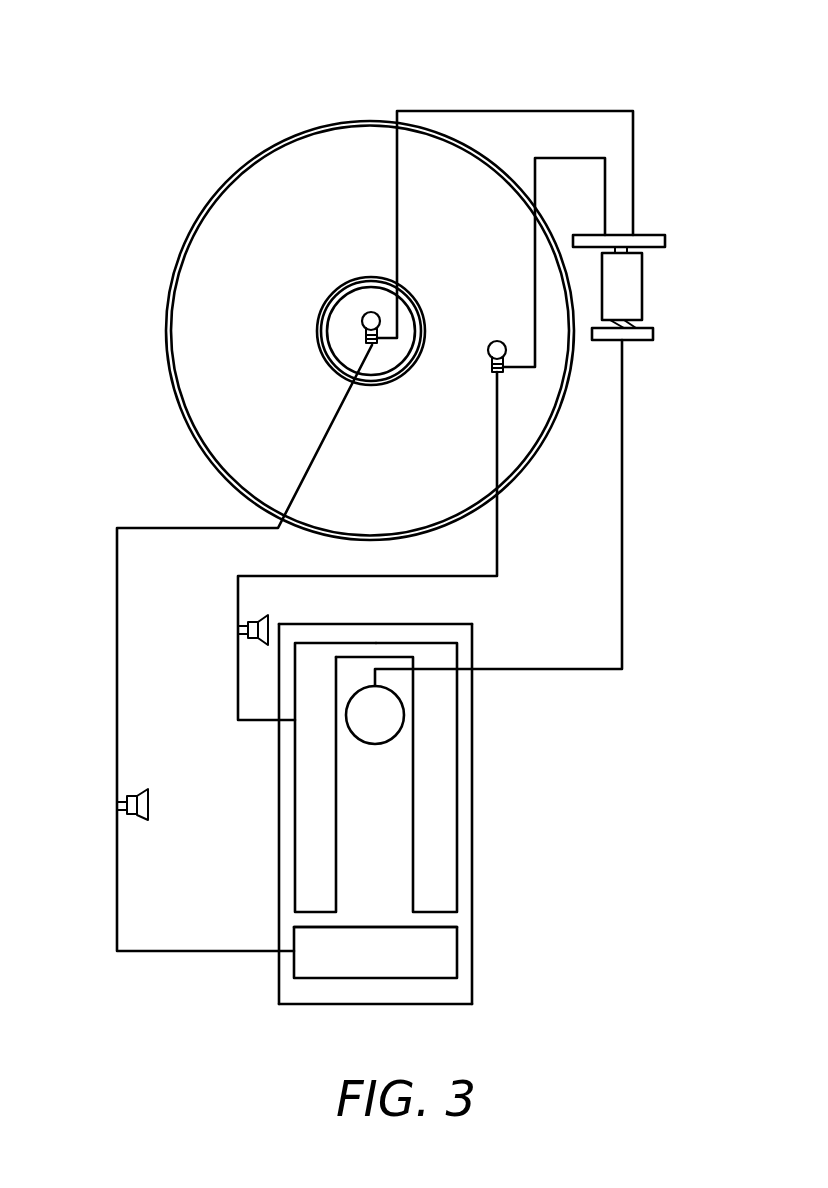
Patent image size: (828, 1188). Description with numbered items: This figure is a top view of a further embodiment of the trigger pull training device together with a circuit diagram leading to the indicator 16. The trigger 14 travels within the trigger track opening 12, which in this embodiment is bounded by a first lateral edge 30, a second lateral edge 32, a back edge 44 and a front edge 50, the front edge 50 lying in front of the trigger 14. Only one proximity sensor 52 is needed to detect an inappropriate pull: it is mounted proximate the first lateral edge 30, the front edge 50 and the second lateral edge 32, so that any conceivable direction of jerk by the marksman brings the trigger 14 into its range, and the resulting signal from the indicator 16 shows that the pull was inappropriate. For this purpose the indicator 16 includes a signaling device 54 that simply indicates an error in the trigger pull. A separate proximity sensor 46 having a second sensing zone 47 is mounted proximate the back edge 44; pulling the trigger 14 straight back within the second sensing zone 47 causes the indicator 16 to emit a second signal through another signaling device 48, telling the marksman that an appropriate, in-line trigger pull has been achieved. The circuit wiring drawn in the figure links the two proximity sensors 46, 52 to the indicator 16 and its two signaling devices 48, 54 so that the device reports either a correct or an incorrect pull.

The trigger track opening 12 is at (463, 867).
The trigger 14 is at (385, 709).
The indicator 16 is at (244, 126).
The first lateral edge 30 is at (278, 795).
The second lateral edge 32 is at (472, 770).
The back edge 44 is at (445, 1005).
The proximity sensor 46 is at (331, 960).
The second sensing zone 47 is at (357, 926).
The signaling device 48 is at (355, 327).
The front edge 50 is at (449, 623).
The proximity sensor 52 is at (310, 878).
The signaling device 54 is at (330, 210).